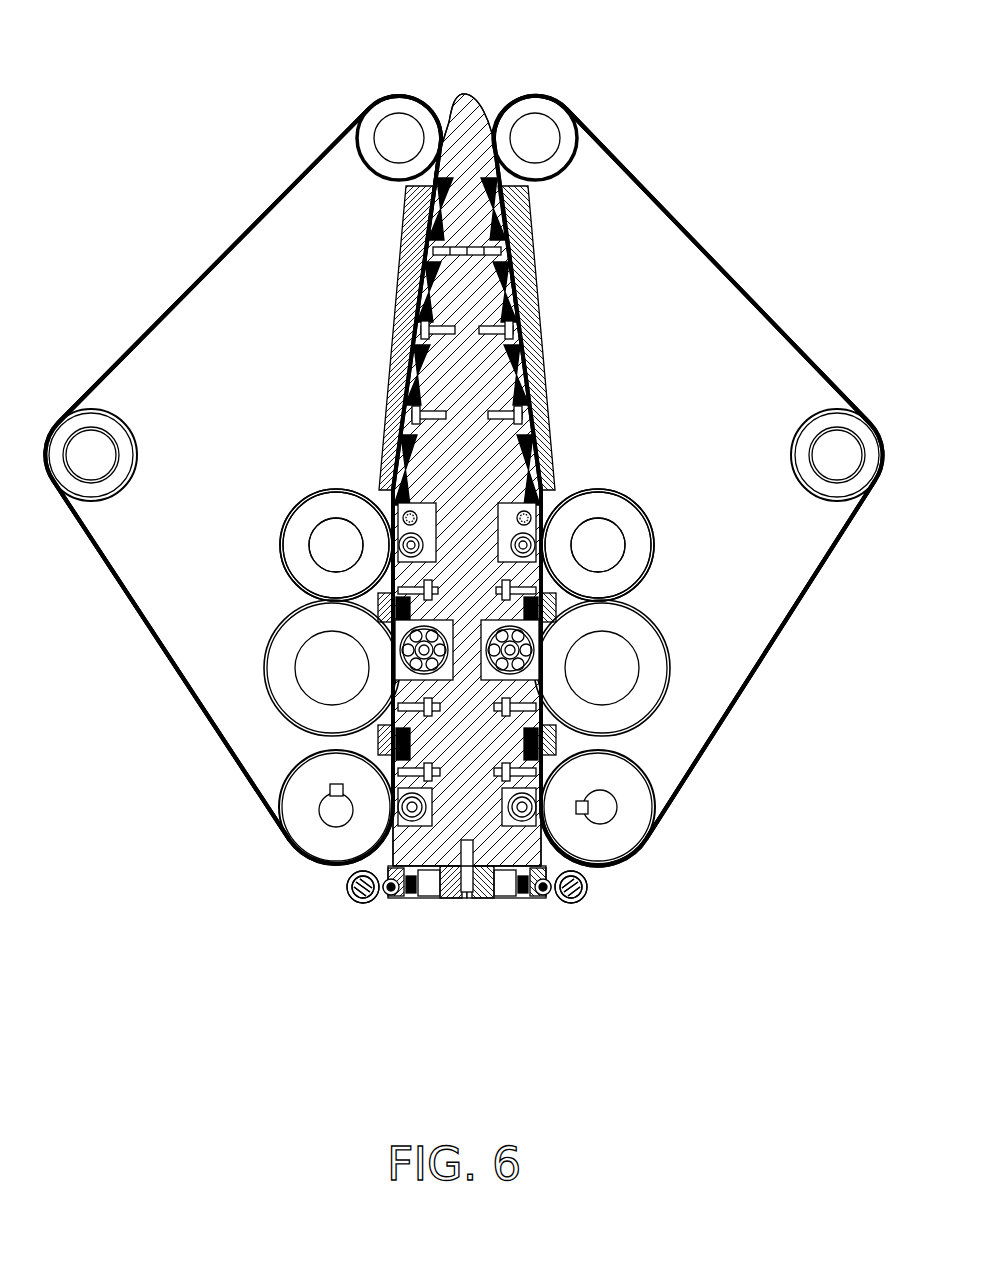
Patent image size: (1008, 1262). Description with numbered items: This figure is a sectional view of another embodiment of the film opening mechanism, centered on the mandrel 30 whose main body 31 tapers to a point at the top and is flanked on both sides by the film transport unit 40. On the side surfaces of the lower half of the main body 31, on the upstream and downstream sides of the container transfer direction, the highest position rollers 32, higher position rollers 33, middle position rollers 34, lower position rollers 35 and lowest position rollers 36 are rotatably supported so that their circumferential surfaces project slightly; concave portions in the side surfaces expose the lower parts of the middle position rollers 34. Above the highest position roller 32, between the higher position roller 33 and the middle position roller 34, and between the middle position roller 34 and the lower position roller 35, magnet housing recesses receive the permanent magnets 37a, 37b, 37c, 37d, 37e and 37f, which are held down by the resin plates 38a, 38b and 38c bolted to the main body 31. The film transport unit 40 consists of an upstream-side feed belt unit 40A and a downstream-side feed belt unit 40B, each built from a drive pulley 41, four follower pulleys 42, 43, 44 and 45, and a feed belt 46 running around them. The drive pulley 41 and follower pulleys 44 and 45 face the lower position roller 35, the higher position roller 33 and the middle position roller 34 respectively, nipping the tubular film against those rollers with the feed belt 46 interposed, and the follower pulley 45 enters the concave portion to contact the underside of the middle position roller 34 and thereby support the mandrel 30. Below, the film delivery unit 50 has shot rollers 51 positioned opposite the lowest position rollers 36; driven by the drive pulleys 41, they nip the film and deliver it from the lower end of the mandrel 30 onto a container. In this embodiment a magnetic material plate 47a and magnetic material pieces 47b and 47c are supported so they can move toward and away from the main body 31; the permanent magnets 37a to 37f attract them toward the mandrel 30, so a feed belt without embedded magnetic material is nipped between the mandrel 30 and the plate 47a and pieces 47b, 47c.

The mandrel 30 is at (472, 76).
The main body 31 is at (486, 487).
The highest position rollers 32 is at (386, 509).
The higher position rollers 33 is at (424, 598).
The middle position rollers 34 is at (434, 684).
The lower position rollers 35 is at (420, 827).
The lowest position rollers 36 is at (392, 897).
The permanent magnet 37a is at (415, 222).
The permanent magnet 37b is at (415, 292).
The permanent magnet 37c is at (406, 388).
The permanent magnet 37d is at (398, 470).
The permanent magnet 37e is at (380, 622).
The permanent magnet 37f is at (380, 726).
The resin plate 38a is at (408, 362).
The resin plate 38b is at (384, 582).
The resin plate 38c is at (386, 774).
The film transport unit 40 is at (155, 214).
The upstream-side feed belt unit 40A is at (314, 168).
The downstream-side feed belt unit 40B is at (620, 159).
The drive pulley 41 is at (290, 835).
The follower pulley 42 is at (135, 446).
The follower pulley 43 is at (410, 103).
The follower pulley 44 is at (284, 539).
The follower pulley 45 is at (280, 656).
The feed belt 46 is at (233, 284).
The magnetic material plate 47a is at (412, 326).
The magnetic material piece 47b is at (378, 605).
The magnetic material piece 47c is at (380, 738).
The film delivery unit 50 is at (289, 881).
The shot rollers 51 is at (359, 889).